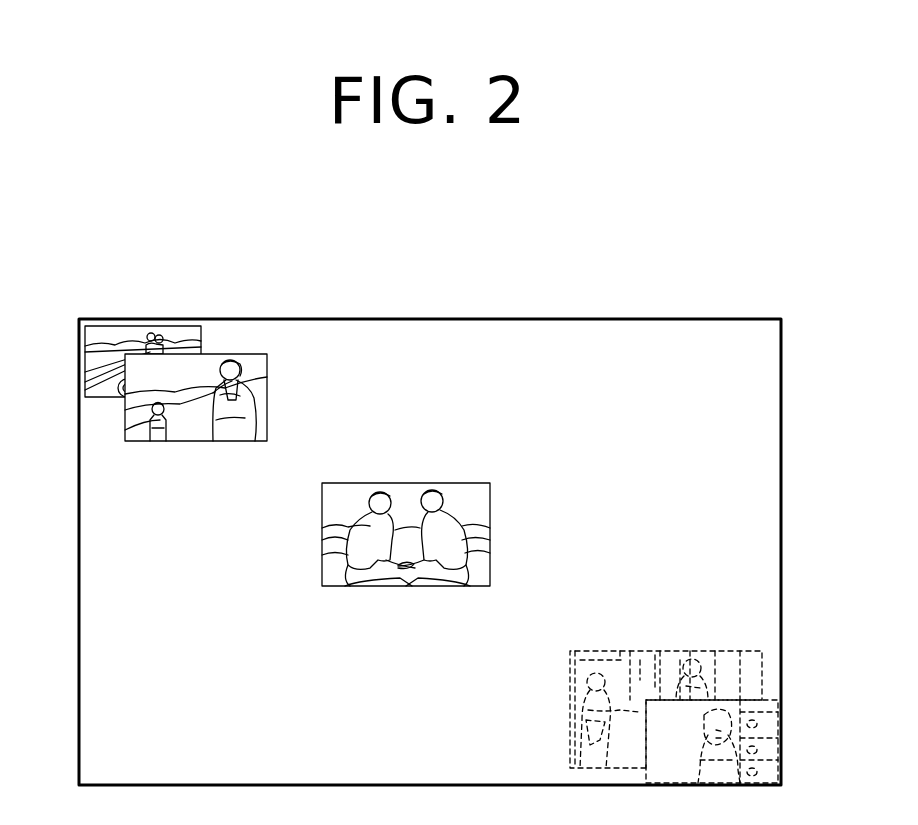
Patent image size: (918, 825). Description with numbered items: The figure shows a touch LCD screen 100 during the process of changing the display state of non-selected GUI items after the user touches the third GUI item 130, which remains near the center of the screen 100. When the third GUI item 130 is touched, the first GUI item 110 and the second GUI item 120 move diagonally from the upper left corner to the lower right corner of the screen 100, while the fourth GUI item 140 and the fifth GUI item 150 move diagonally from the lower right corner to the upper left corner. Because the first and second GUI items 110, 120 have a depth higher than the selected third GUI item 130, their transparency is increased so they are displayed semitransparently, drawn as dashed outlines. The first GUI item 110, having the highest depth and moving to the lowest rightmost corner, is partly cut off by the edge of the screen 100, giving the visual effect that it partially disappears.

The touch LCD screen 100 is at (650, 318).
The first GUI item 110 is at (775, 700).
The second GUI item 120 is at (762, 651).
The third GUI item 130 is at (490, 483).
The fourth GUI item 140 is at (267, 354).
The fifth GUI item 150 is at (80, 320).